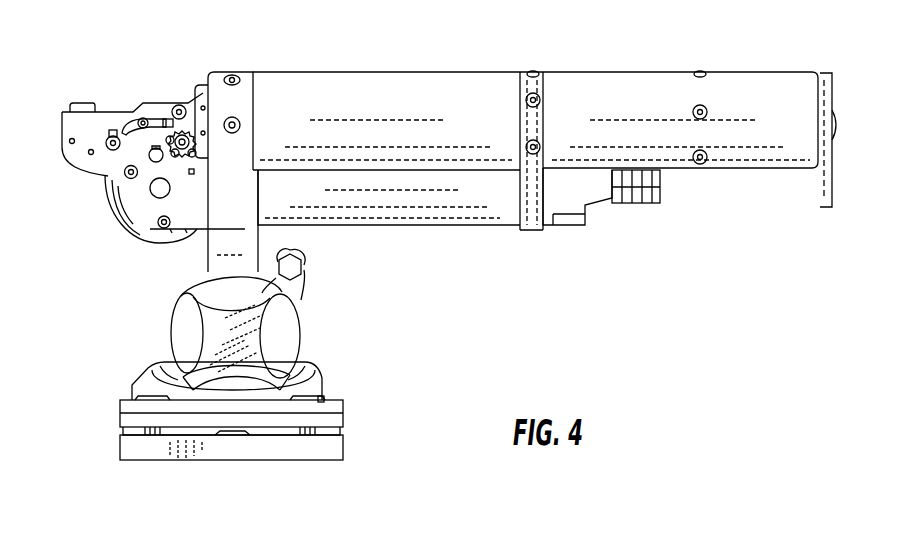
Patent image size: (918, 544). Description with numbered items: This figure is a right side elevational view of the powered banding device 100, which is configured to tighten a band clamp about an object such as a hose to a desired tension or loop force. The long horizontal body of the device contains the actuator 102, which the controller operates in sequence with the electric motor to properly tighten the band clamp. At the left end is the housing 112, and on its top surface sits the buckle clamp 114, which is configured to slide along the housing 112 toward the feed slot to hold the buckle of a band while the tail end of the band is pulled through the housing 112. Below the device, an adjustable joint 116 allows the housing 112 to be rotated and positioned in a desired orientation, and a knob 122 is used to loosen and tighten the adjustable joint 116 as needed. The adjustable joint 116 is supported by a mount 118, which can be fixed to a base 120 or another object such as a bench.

The powered banding device 100 is at (645, 289).
The actuator 102 is at (673, 73).
The housing 112 is at (98, 160).
The buckle clamp 114 is at (83, 103).
The adjustable joint 116 is at (287, 328).
The mount 118 is at (155, 365).
The base 120 is at (333, 445).
The knob 122 is at (195, 300).